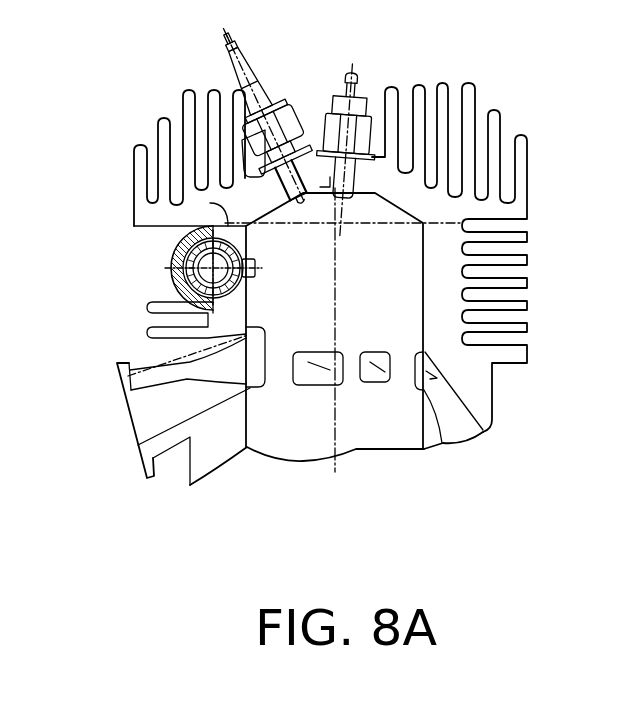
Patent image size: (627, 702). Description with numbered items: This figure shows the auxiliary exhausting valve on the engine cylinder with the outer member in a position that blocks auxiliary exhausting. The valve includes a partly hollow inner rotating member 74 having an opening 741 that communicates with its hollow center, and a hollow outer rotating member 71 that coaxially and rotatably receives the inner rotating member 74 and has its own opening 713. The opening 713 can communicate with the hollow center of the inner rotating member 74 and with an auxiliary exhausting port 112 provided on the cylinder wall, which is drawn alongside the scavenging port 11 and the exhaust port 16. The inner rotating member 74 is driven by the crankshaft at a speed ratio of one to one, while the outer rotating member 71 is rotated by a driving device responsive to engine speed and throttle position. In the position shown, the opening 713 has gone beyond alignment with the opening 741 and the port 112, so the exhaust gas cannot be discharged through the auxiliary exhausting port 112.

The opening 741 is at (210, 202).
The scavenging port 11 is at (255, 366).
The inner rotating member 74 is at (172, 252).
The outer rotating member 71 is at (168, 270).
The opening 713 is at (178, 298).
The auxiliary exhausting port 112 is at (255, 262).
The exhaust port 16 is at (118, 375).